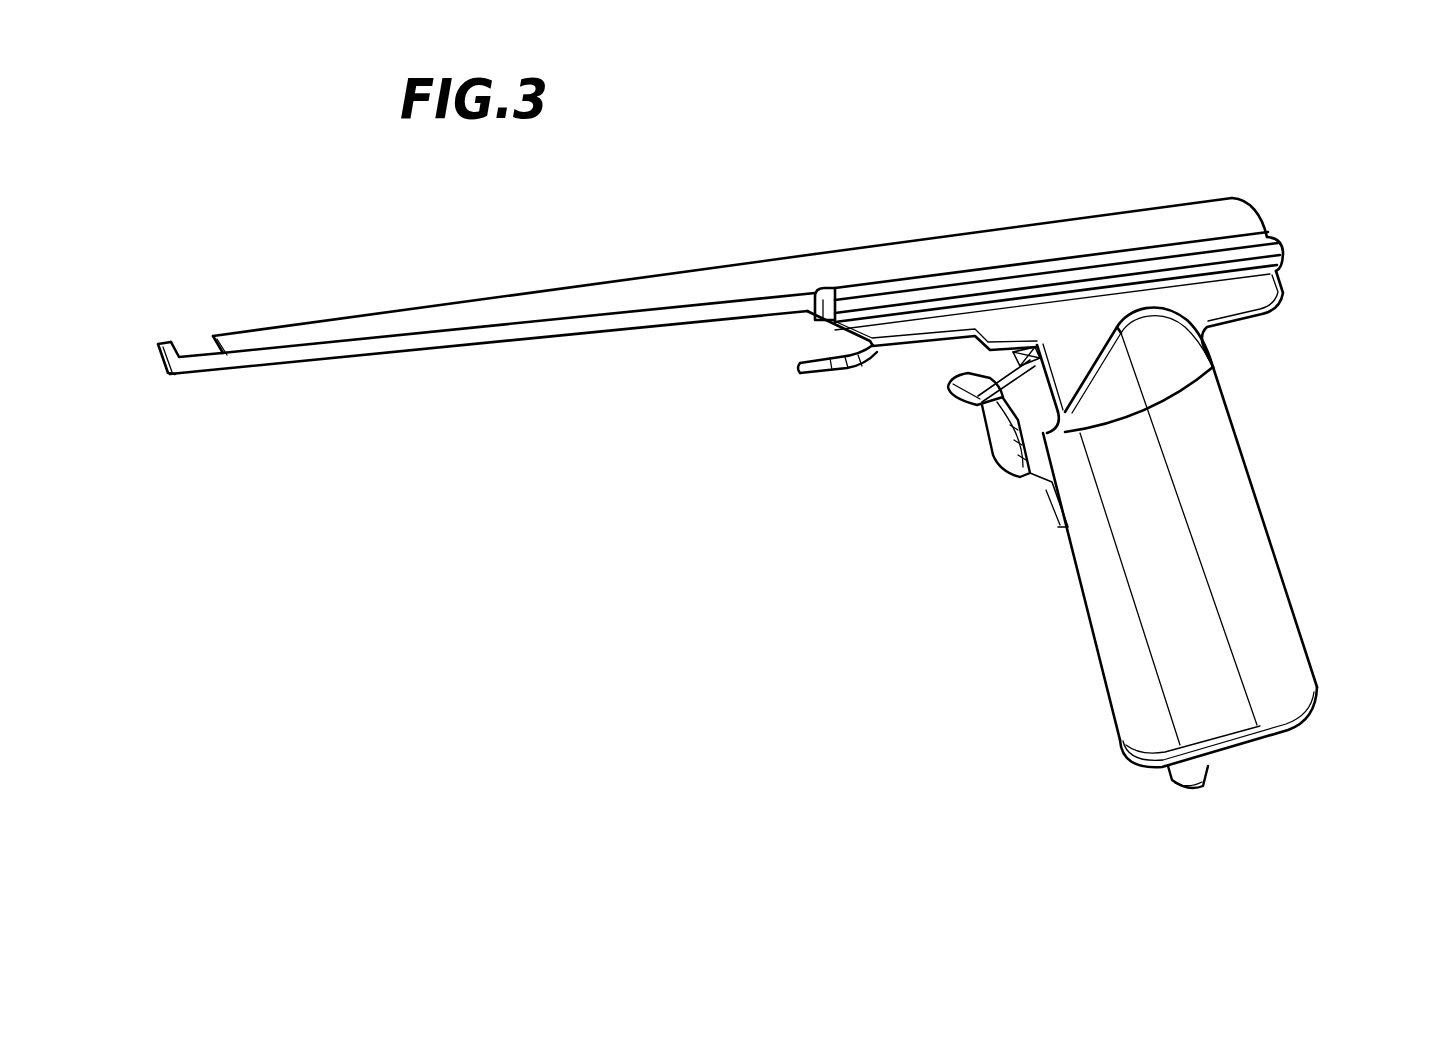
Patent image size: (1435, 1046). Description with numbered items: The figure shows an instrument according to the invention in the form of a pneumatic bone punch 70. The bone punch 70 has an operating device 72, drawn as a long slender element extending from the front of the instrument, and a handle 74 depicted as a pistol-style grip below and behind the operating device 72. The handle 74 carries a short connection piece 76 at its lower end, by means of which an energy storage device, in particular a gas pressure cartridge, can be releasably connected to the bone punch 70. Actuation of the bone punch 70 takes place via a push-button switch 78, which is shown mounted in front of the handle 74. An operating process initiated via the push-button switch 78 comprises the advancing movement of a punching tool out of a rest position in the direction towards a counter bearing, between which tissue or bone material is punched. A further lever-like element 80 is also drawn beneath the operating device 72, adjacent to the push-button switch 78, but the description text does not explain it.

The bone punch 70 is at (936, 174).
The operating device 72 is at (456, 382).
The handle 74 is at (1291, 442).
The short connection piece 76 is at (1135, 800).
The push-button switch 78 is at (942, 458).
The lever 80 is at (798, 410).